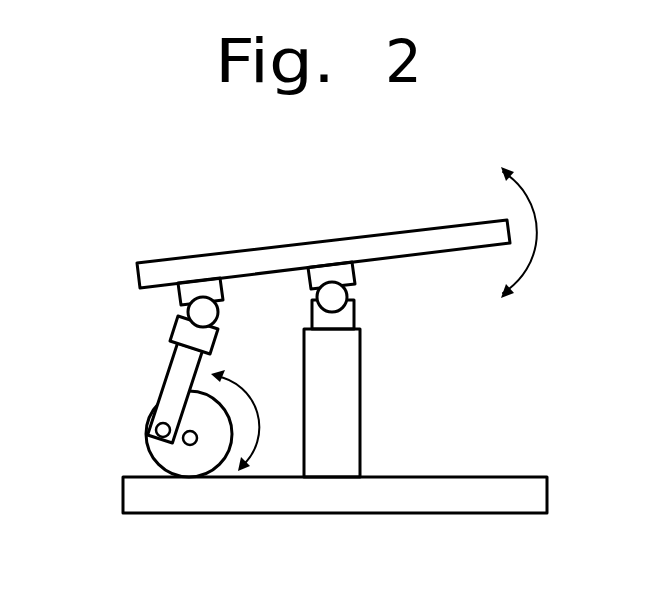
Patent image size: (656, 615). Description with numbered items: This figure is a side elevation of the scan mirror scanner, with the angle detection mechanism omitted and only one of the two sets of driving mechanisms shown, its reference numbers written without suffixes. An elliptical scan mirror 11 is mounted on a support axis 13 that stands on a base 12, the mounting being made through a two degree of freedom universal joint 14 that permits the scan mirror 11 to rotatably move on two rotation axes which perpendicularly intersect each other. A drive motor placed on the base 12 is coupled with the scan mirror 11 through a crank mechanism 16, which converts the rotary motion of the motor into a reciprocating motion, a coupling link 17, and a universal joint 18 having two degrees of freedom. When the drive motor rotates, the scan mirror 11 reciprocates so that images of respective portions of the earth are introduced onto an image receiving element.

The scan mirror 11 is at (390, 232).
The base 12 is at (492, 500).
The support axis 13 is at (338, 392).
The universal joint 14 is at (370, 291).
The crank mechanism 16 is at (145, 421).
The coupling link 17 is at (177, 375).
The universal joint 18 is at (165, 318).